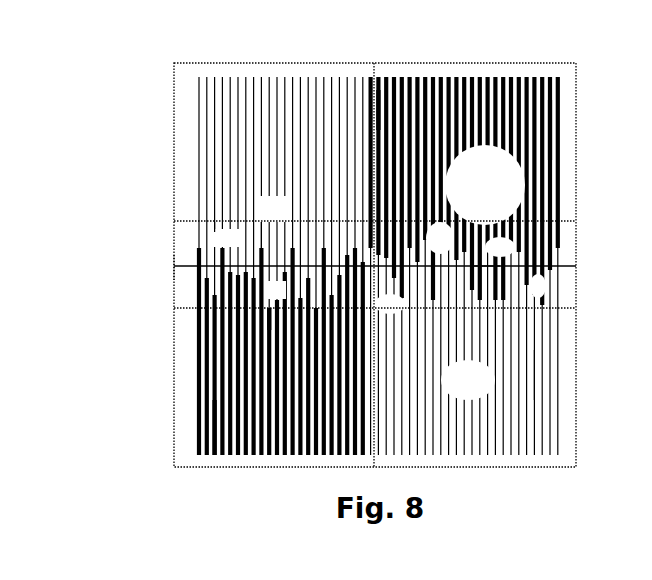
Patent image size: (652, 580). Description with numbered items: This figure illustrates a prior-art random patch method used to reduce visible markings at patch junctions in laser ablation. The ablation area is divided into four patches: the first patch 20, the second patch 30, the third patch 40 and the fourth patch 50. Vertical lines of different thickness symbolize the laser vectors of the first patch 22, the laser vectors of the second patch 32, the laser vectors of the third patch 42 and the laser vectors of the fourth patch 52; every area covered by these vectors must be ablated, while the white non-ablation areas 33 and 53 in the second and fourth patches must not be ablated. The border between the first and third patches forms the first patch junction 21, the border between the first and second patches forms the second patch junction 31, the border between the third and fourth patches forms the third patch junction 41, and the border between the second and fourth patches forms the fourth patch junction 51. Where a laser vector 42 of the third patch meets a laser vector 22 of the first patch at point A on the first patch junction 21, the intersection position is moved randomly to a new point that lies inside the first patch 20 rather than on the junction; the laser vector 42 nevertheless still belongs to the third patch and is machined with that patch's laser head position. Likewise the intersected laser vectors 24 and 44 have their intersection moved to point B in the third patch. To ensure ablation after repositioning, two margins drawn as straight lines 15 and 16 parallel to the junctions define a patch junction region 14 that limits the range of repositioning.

The first patch 20 is at (356, 249).
The laser vectors of the first patch 22 is at (220, 238).
The laser vector of the first patch 24 is at (267, 247).
The margin line 15 is at (182, 220).
The first patch junction 21 is at (193, 262).
The patch junction region 14 is at (178, 272).
The margin line 16 is at (182, 307).
The laser vector of the third patch 44 is at (268, 310).
The third patch 40 is at (167, 360).
The third patch junction 41 is at (370, 372).
The laser vectors of the third patch 42 is at (217, 423).
The laser vectors of the second patch 32 is at (548, 133).
The second patch 30 is at (568, 173).
The second patch junction 31 is at (382, 117).
The non-ablation area 33 is at (517, 190).
The fourth patch 50 is at (568, 338).
The fourth patch junction 51 is at (485, 266).
The laser vectors of the fourth patch 52 is at (538, 372).
The non-ablation area 53 is at (398, 308).